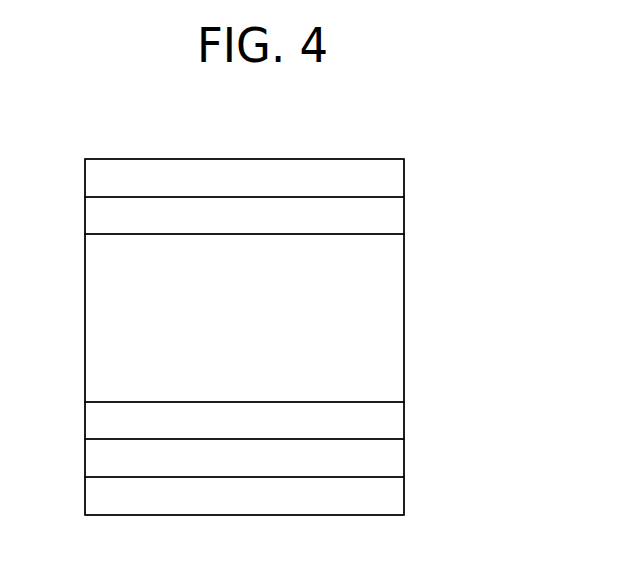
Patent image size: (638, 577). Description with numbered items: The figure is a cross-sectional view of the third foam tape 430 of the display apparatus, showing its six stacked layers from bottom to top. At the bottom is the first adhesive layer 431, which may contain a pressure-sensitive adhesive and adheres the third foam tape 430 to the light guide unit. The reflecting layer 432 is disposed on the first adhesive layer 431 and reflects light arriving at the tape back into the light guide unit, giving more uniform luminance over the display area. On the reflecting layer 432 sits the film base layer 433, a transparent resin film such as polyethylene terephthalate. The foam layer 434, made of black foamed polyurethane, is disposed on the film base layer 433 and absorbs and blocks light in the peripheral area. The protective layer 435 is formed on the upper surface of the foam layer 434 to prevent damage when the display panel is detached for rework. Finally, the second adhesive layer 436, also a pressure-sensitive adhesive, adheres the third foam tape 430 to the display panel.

The third foam tape 430 is at (500, 158).
The first adhesive layer 431 is at (403, 502).
The reflecting layer 432 is at (403, 464).
The film base layer 433 is at (403, 420).
The foam layer 434 is at (403, 313).
The protective layer 435 is at (403, 215).
The second adhesive layer 436 is at (403, 172).